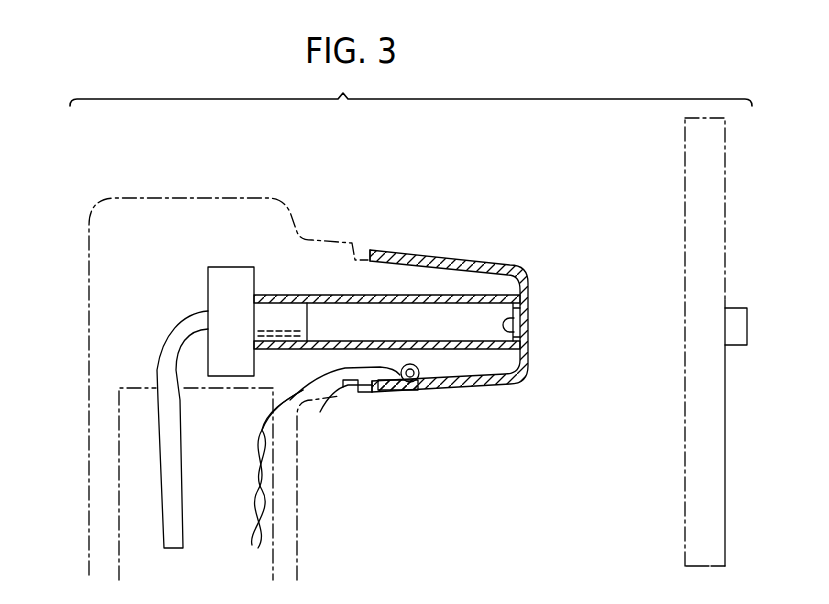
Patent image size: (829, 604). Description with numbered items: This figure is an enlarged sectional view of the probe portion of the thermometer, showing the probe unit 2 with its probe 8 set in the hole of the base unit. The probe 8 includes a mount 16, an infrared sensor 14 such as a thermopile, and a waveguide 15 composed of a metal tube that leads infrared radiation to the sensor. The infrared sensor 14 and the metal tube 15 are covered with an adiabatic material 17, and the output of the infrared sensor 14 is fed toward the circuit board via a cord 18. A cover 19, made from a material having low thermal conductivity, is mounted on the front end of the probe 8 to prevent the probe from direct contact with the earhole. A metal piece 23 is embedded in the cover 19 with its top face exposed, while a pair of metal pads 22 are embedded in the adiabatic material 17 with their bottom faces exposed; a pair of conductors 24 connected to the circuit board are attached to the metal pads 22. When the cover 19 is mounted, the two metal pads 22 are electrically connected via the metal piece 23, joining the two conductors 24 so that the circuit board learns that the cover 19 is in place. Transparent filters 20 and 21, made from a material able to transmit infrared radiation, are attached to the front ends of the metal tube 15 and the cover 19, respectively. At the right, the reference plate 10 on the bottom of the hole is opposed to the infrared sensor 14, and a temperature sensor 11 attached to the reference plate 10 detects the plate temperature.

The probe unit 2 is at (88, 489).
The probe 8 is at (433, 293).
The reference plate 10 is at (725, 450).
The temperature sensor 11 is at (745, 345).
The infrared sensor 14 is at (283, 318).
The waveguide 15 is at (471, 300).
The mount 16 is at (235, 267).
The adiabatic material 17 is at (397, 277).
The cord 18 is at (178, 472).
The cover 19 is at (497, 393).
The transparent filter 20 is at (529, 333).
The transparent filter 21 is at (530, 322).
The metal pads 22 is at (413, 388).
The metal piece 23 is at (400, 392).
The conductors 24 is at (343, 393).